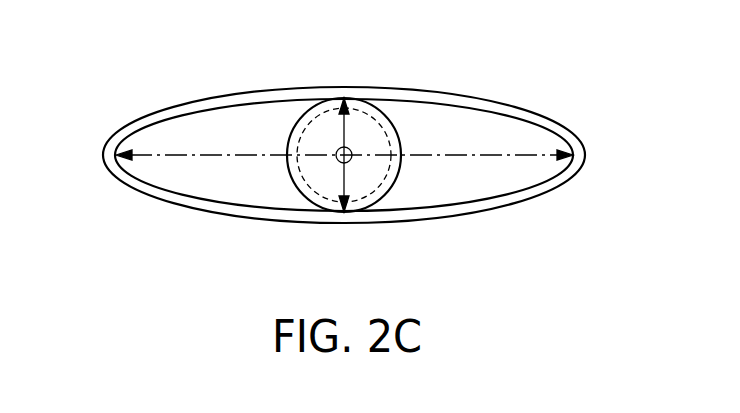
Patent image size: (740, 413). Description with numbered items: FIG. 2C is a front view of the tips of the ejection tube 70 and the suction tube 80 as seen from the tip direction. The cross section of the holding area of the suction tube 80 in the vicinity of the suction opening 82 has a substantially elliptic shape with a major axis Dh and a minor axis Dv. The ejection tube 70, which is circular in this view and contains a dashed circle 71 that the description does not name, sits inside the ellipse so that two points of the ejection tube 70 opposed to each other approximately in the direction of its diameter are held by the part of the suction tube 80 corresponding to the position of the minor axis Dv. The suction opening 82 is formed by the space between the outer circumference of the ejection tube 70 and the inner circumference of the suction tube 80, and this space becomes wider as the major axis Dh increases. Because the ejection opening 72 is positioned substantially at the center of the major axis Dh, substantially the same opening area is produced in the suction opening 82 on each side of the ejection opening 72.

The ejection tube 70 is at (396, 185).
The effective lens region 71 is at (368, 122).
The ejection opening 72 is at (350, 163).
The suction tube 80 is at (213, 217).
The suction opening 82 is at (212, 125).
The minor axis Dv is at (343, 180).
The major axis Dh is at (488, 157).